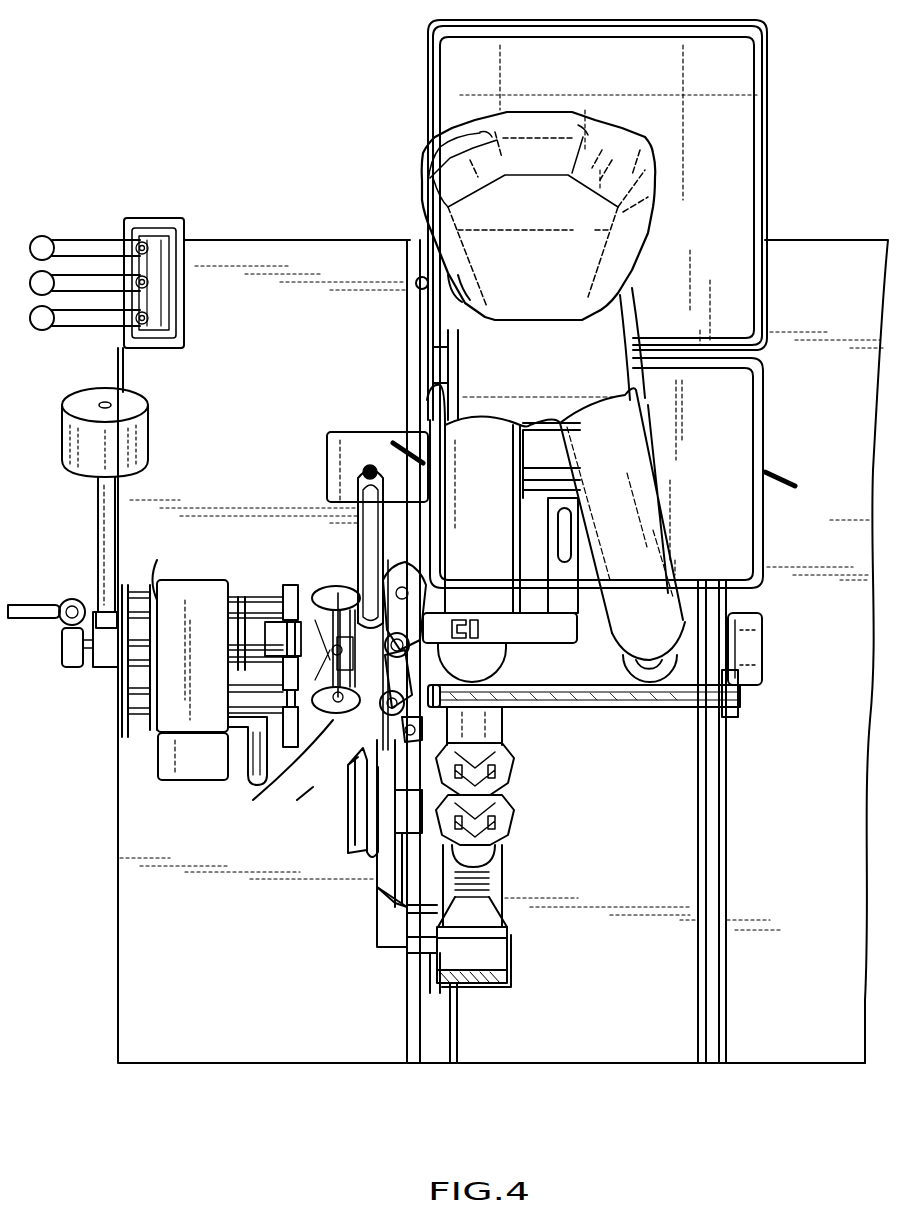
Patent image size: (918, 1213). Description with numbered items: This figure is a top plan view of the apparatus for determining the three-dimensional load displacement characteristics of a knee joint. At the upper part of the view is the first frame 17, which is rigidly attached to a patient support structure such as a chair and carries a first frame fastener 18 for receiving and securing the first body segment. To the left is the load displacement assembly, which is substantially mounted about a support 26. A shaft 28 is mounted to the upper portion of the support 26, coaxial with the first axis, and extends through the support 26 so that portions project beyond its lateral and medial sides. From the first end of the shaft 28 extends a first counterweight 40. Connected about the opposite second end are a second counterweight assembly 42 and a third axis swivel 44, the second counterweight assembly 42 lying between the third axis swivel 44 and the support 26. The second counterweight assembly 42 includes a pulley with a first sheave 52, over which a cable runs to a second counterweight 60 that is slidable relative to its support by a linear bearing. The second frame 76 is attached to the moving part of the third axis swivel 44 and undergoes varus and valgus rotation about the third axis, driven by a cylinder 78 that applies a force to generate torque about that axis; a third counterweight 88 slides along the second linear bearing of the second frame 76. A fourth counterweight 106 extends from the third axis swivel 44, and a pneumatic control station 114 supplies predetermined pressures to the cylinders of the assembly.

The first frame 17 is at (537, 643).
The first frame fastener 18 is at (492, 610).
The support 26 is at (157, 730).
The shaft 28 is at (122, 665).
The first counterweight 40 is at (147, 418).
The second counterweight assembly 42 is at (300, 797).
The third axis swivel 44 is at (400, 545).
The first sheave 52 is at (320, 587).
The second counterweight 60 is at (267, 792).
The second frame 76 is at (285, 945).
The cylinder 78 is at (370, 466).
The third counterweight 88 is at (350, 857).
The fourth counterweight 106 is at (762, 641).
The pneumatic control station 114 is at (186, 228).